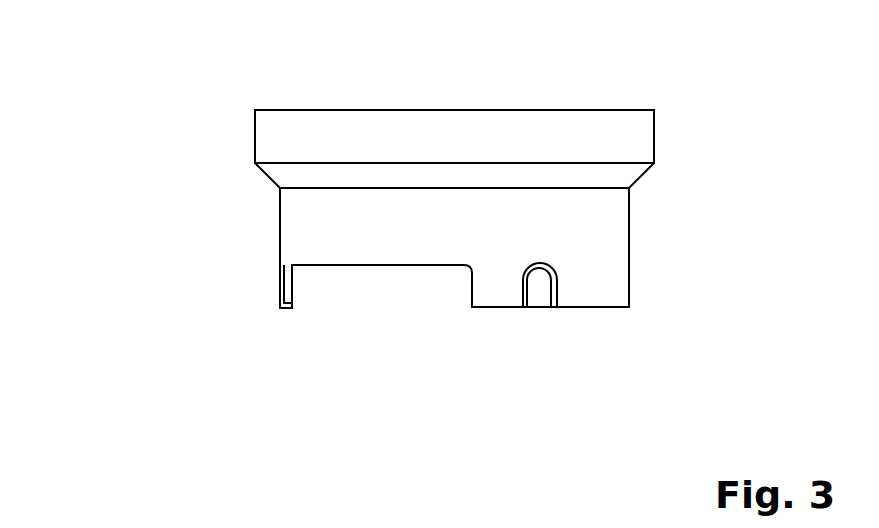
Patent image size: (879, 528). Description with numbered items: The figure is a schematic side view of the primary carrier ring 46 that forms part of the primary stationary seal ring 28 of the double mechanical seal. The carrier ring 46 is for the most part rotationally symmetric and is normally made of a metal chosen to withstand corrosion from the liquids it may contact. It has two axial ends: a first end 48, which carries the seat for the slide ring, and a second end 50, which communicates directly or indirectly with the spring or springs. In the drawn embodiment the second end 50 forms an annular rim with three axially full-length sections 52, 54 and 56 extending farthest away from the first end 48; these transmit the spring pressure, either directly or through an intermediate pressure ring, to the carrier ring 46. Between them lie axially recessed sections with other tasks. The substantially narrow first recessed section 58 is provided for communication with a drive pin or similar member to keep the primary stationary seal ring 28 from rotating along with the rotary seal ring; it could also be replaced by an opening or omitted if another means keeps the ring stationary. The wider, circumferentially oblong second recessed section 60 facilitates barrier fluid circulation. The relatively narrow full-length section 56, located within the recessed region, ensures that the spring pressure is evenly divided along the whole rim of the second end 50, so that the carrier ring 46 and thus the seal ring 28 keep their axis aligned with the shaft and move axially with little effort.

The primary stationary seal ring 28 is at (232, 182).
The first end 48 is at (237, 92).
The primary carrier ring 46 is at (443, 234).
The second end 50 is at (243, 323).
The axially full-length section 56 is at (290, 309).
The second recessed section 60 is at (389, 266).
The axially full-length section 54 is at (493, 308).
The first recessed section 58 is at (535, 278).
The axially full-length section 52 is at (592, 308).